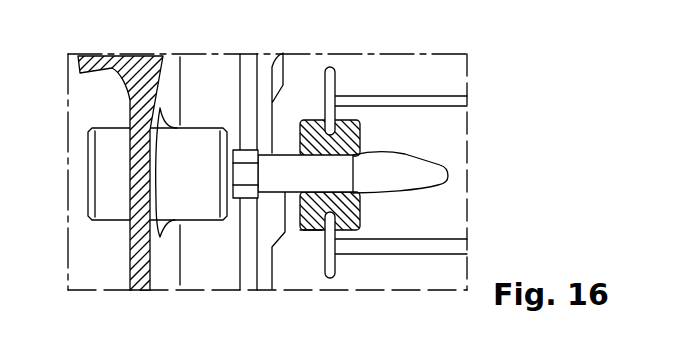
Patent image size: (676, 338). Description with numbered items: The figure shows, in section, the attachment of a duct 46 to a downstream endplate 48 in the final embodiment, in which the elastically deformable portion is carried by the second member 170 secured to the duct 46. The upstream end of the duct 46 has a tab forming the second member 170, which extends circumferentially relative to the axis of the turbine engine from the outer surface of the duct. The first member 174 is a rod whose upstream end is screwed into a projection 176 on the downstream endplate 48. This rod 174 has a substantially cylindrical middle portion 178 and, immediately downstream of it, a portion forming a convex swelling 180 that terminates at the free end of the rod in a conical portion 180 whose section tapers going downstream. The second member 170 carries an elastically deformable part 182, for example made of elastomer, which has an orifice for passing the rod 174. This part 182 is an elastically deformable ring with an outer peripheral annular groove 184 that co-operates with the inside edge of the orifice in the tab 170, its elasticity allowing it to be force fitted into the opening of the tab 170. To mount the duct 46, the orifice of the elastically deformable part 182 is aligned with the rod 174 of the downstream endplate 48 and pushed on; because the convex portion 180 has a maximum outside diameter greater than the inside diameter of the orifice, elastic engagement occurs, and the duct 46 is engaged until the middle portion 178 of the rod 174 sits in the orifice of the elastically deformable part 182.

The duct 46 is at (438, 74).
The downstream endplate 48 is at (143, 98).
The second member 170 is at (331, 266).
The first member 174 is at (416, 206).
The projection 176 is at (202, 202).
The middle portion 178 is at (320, 170).
The convex swelling 180 is at (387, 165).
The elastically deformable part 182 is at (359, 232).
The outer peripheral annular groove 184 is at (308, 230).